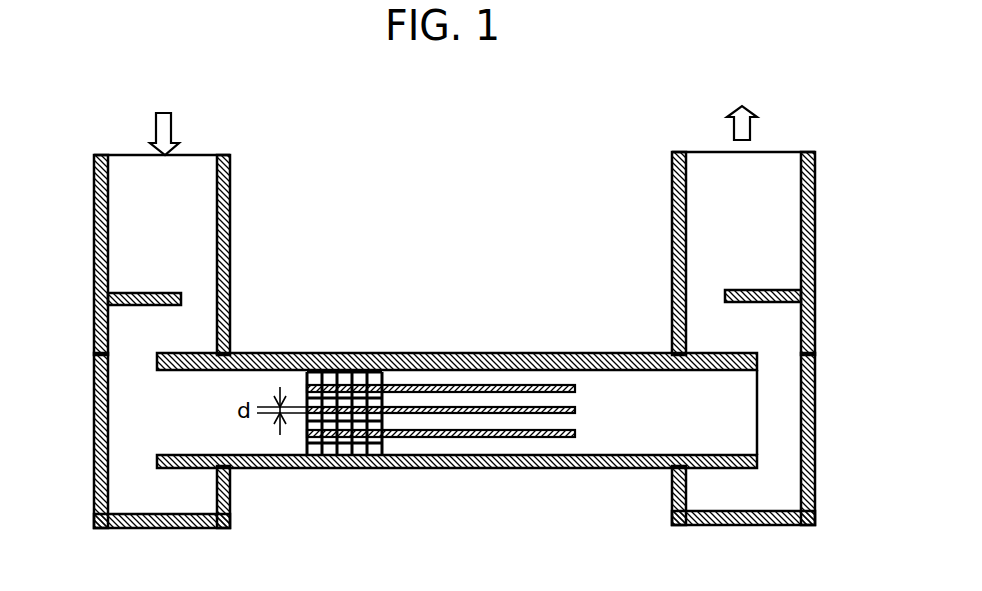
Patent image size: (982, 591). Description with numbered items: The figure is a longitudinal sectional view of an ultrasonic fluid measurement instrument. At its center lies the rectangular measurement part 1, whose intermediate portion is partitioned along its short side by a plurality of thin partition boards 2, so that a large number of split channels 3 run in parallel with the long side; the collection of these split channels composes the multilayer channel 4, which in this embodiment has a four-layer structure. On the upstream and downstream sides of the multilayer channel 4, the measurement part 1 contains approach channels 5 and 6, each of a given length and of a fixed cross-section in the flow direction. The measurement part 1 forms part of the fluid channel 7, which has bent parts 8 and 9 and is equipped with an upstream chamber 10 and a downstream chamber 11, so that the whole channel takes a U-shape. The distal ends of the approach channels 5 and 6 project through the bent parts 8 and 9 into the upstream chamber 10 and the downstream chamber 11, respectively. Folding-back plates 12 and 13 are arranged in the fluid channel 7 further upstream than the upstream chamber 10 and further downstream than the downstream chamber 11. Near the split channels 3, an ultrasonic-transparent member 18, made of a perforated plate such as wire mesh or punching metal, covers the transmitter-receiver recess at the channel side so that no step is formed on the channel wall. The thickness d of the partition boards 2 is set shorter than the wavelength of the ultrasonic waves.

The measurement part 1 is at (513, 352).
The partition boards 2 is at (585, 383).
The split channels 3 is at (463, 445).
The multilayer channel 4 is at (585, 443).
The approach channel 5 is at (233, 387).
The approach channel 6 is at (675, 390).
The fluid channel 7 is at (230, 172).
The bent part 8 is at (120, 460).
The bent part 9 is at (780, 470).
The upstream chamber 10 is at (120, 362).
The downstream chamber 11 is at (783, 350).
The folding-back plate 12 is at (183, 300).
The folding-back plate 13 is at (723, 293).
The ultrasonic-transparent member 18 is at (357, 377).